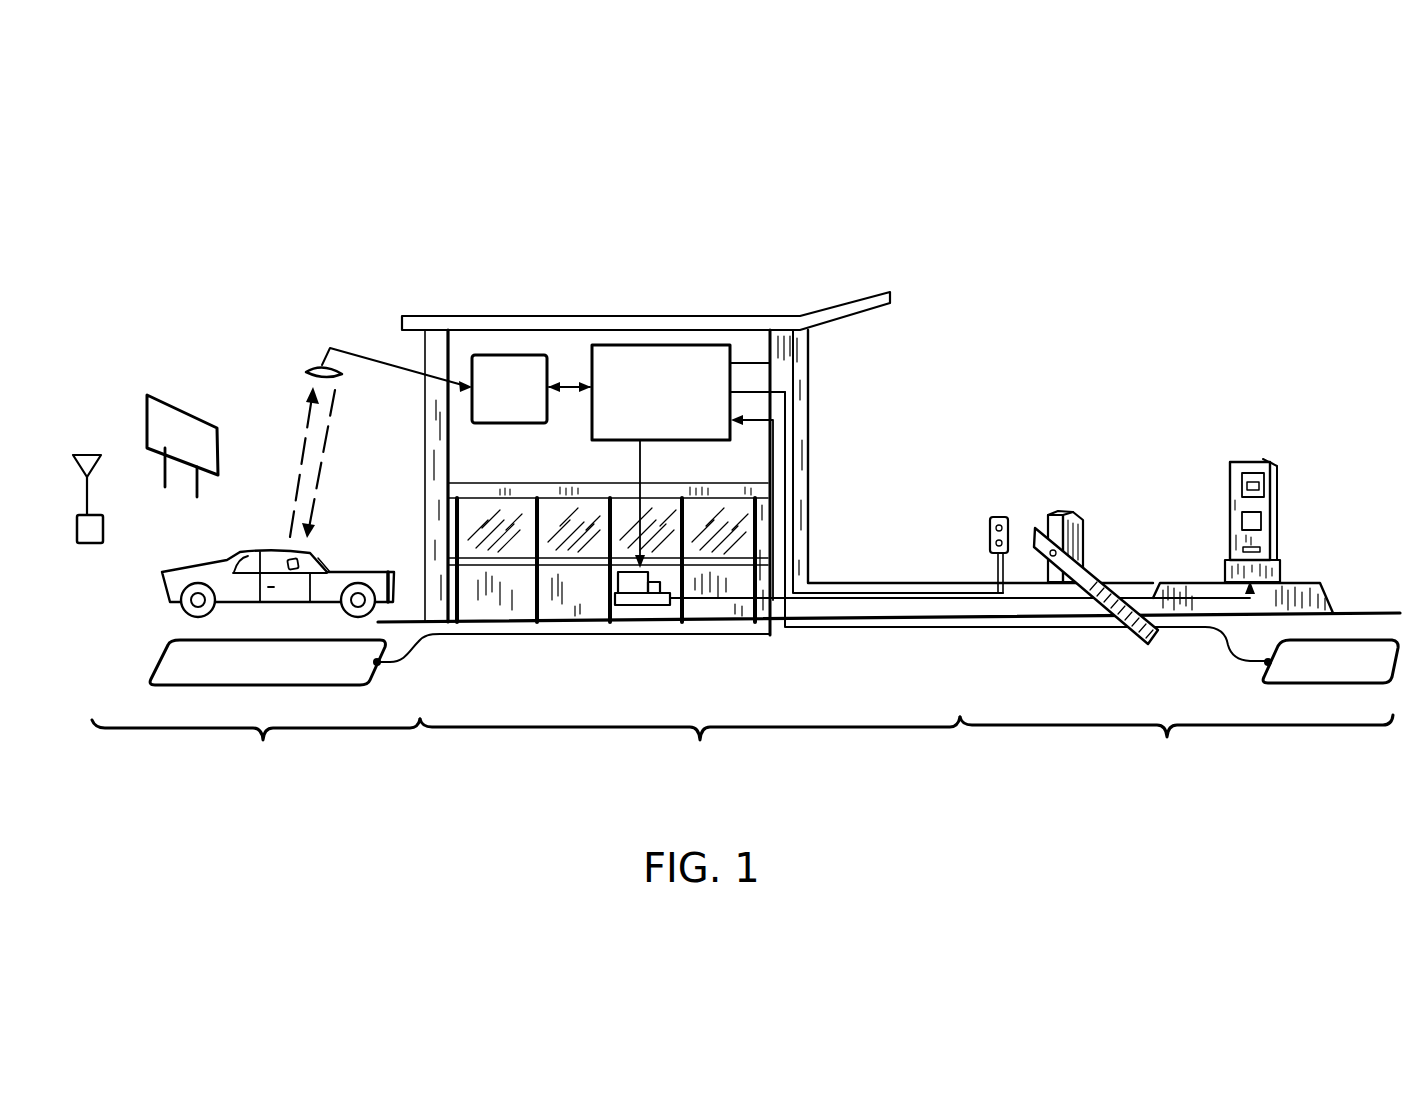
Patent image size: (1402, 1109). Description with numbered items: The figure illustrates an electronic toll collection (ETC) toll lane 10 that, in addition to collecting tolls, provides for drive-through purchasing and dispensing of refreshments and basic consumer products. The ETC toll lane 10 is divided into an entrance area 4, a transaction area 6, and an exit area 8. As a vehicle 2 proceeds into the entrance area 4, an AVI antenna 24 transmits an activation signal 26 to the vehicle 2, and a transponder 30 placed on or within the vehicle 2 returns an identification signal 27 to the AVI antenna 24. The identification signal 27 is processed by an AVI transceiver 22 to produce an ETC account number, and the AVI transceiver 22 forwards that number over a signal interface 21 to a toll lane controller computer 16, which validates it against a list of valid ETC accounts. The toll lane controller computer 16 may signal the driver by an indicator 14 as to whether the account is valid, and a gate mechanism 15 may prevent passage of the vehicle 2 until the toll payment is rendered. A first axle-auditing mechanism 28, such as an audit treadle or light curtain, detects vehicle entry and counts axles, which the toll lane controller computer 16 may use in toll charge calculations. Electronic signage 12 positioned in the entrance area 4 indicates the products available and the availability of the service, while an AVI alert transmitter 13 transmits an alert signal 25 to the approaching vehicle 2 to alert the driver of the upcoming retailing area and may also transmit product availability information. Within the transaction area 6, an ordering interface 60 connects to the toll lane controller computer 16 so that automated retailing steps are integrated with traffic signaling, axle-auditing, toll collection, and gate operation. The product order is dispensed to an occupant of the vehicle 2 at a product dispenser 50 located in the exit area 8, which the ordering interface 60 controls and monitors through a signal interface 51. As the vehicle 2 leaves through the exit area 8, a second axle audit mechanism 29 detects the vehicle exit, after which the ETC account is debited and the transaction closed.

The vehicle 2 is at (185, 573).
The entrance area 4 is at (256, 748).
The transaction area 6 is at (690, 746).
The exit area 8 is at (1176, 741).
The ETC toll lane 10 is at (716, 255).
The electronic signage 12 is at (187, 412).
The AVI alert transmitter 13 is at (93, 541).
The indicator 14 is at (990, 538).
The gate mechanism 15 is at (1083, 542).
The toll lane controller computer 16 is at (625, 445).
The signal interface 21 is at (571, 394).
The AVI transceiver 22 is at (494, 427).
The AVI antenna 24 is at (318, 366).
The alert signal 25 is at (85, 436).
The activation signal 26 is at (322, 467).
The identification signal 27 is at (305, 439).
The first axle-auditing mechanism 28 is at (160, 657).
The second axle audit mechanism 29 is at (1262, 686).
The transponder 30 is at (279, 563).
The product dispenser 50 is at (1278, 500).
The signal interface 51 is at (1158, 582).
The ordering interface 60 is at (618, 586).